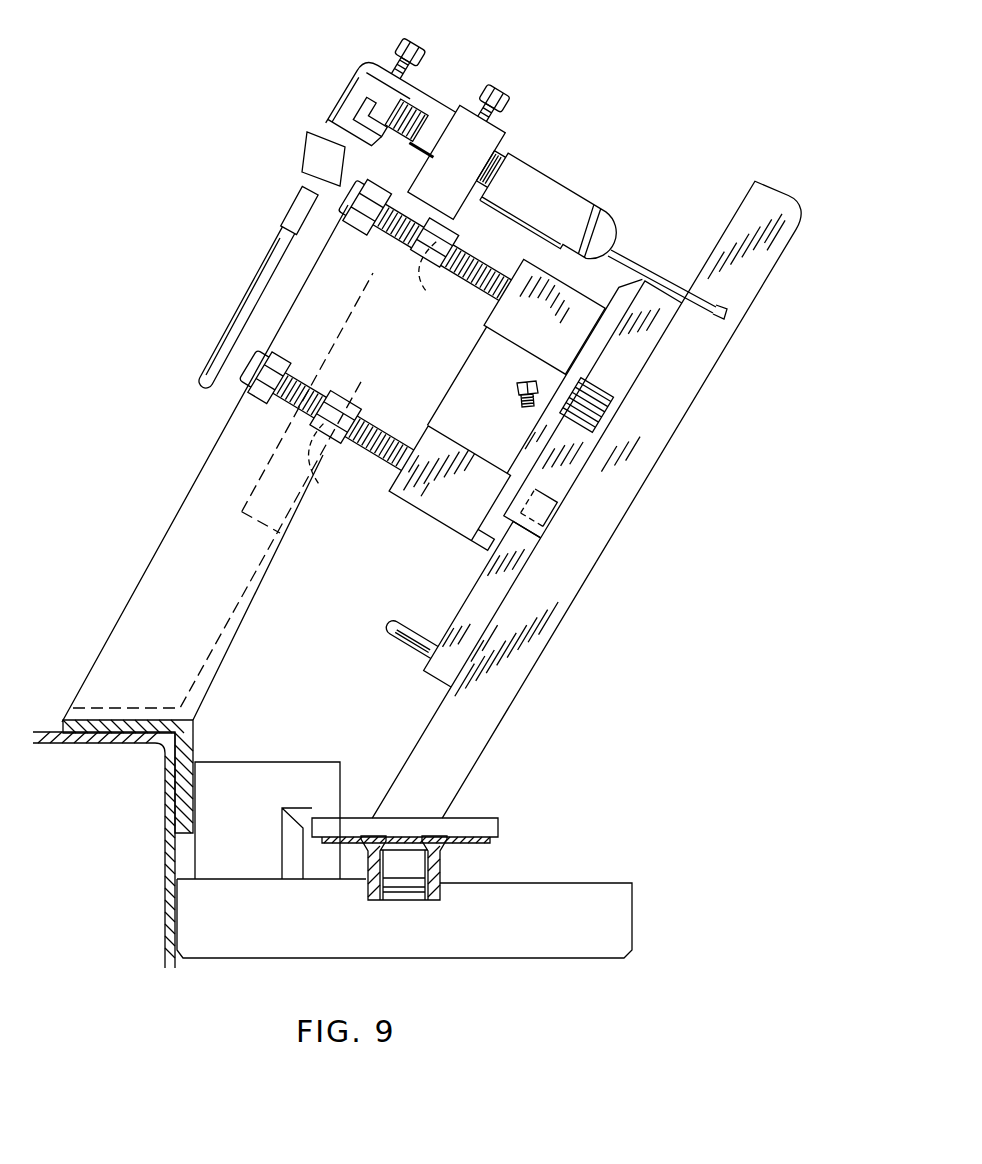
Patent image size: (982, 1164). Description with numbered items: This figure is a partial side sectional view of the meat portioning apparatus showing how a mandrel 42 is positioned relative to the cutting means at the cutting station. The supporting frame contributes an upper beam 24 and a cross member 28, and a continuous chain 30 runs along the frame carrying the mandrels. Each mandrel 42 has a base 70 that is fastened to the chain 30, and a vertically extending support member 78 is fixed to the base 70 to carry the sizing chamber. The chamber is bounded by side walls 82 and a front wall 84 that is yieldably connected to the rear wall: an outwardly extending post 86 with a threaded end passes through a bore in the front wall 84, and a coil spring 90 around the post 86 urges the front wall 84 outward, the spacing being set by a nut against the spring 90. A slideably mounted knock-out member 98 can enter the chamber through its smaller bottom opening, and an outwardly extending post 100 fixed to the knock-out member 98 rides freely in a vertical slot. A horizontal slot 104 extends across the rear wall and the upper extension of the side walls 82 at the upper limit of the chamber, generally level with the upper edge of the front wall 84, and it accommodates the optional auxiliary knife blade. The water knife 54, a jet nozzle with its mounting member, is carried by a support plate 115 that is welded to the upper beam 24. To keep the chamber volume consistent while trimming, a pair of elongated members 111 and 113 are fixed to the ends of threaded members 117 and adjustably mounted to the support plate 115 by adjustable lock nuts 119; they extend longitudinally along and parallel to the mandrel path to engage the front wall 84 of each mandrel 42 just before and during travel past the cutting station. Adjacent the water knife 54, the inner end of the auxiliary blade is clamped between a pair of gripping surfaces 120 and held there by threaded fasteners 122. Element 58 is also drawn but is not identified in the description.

The upper beam 24 is at (163, 820).
The cross member 28 is at (625, 912).
The continuous chain 30 is at (440, 857).
The mandrel 42 is at (630, 534).
The water knife 54 is at (537, 156).
The pin 58 is at (275, 247).
The base 70 is at (465, 817).
The support member 78 is at (505, 700).
The side wall 82 is at (583, 447).
The front wall 84 is at (603, 327).
The post 86 is at (520, 398).
The coil spring 90 is at (600, 392).
The knock-out member 98 is at (527, 548).
The post 100 is at (400, 613).
The horizontal slot 104 is at (718, 312).
The elongated member 111 is at (503, 333).
The elongated member 113 is at (437, 513).
The support plate 115 is at (232, 651).
The threaded member 117 is at (370, 420).
The adjustable lock nut 119 is at (324, 485).
The gripping surface 120 is at (370, 63).
The threaded fastener 122 is at (407, 43).